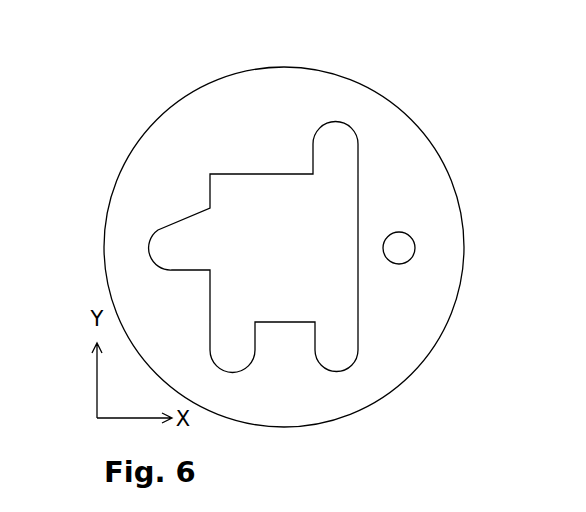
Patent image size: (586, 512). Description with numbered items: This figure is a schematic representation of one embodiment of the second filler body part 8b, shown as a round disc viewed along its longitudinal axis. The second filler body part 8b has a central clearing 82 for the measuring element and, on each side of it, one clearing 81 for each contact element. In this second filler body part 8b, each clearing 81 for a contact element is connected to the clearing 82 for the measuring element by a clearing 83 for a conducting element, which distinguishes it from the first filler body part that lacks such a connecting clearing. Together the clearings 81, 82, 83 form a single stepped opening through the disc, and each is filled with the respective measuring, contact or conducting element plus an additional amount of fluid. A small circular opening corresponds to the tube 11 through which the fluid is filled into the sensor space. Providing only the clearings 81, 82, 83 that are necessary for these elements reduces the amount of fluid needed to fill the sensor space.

The second filler body part 8b is at (420, 340).
The clearing for a measuring element 82 is at (278, 300).
The clearing for a contact element 81 is at (162, 226).
The clearing for a conducting element 83 is at (182, 213).
The tube 11 is at (400, 250).